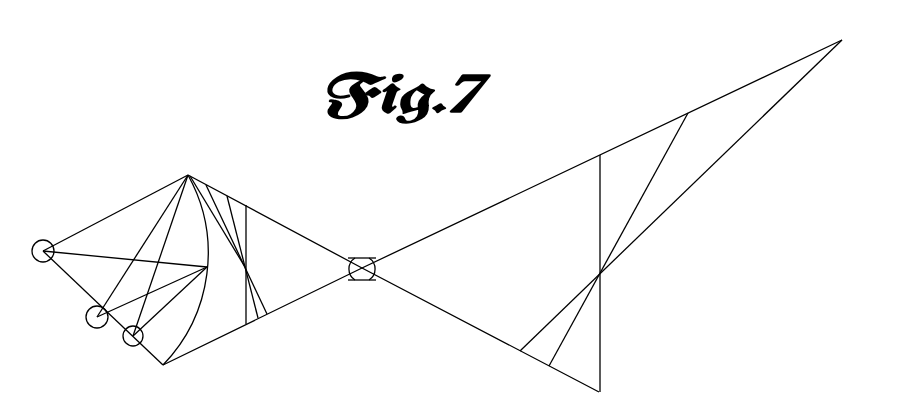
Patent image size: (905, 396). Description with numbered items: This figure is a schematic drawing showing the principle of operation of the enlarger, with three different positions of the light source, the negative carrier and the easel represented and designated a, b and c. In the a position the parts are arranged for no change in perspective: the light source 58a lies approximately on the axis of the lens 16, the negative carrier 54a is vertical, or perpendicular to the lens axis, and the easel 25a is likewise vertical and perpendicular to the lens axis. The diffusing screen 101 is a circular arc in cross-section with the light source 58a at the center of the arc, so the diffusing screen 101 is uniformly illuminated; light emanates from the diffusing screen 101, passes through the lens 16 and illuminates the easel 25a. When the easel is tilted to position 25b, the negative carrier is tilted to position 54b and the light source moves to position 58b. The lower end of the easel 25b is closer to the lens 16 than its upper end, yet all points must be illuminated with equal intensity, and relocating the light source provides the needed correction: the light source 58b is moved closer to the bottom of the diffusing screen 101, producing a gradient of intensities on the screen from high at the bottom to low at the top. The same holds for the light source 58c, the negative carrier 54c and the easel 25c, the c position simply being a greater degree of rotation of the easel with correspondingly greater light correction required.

The diffusing screen 101 is at (191, 177).
The negative carrier in position a 54a is at (248, 227).
The negative carrier in position b 54b is at (233, 200).
The negative carrier in position c 54c is at (213, 189).
The light source in position a 58a is at (36, 242).
The light source in position b 58b is at (84, 324).
The light source in position c 58c is at (125, 344).
The lens 16 is at (359, 257).
The easel in position a 25a is at (598, 212).
The easel in position b 25b is at (648, 182).
The easel in position c 25c is at (712, 168).